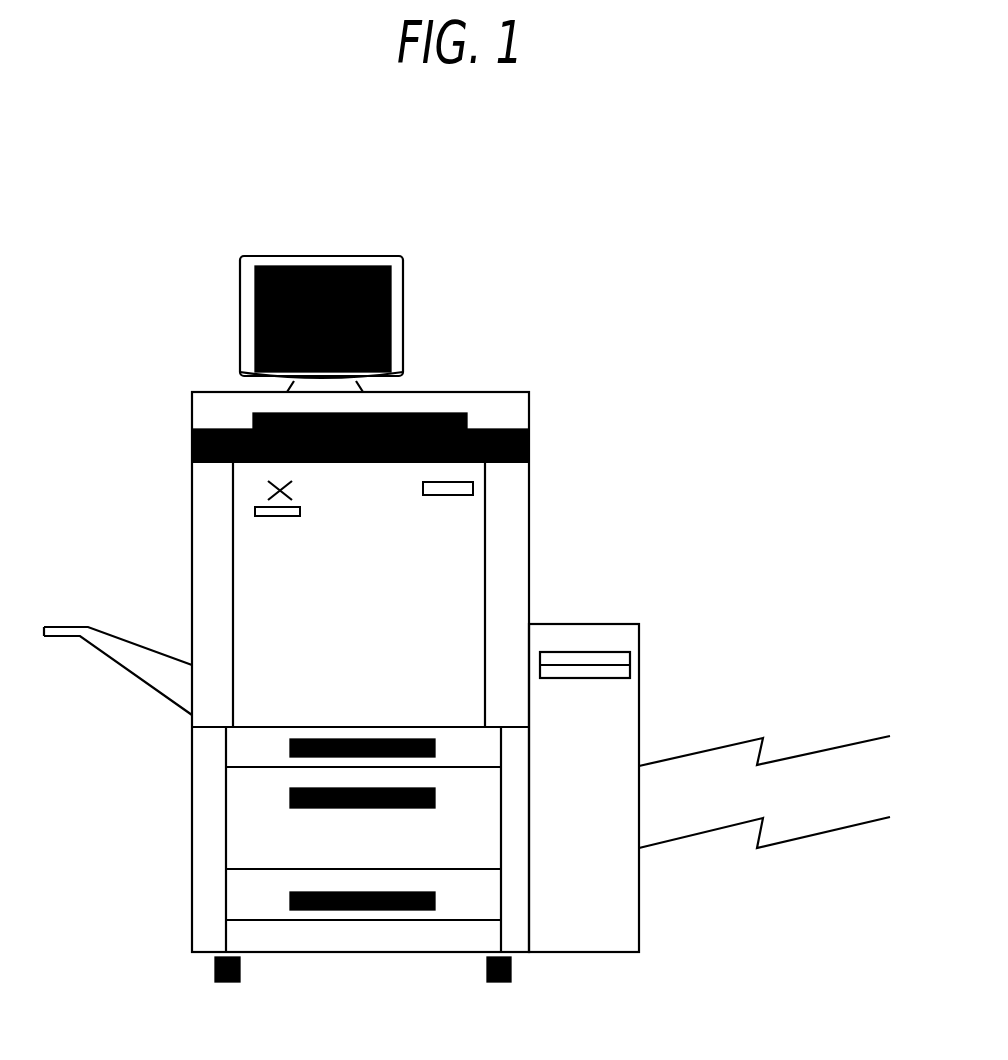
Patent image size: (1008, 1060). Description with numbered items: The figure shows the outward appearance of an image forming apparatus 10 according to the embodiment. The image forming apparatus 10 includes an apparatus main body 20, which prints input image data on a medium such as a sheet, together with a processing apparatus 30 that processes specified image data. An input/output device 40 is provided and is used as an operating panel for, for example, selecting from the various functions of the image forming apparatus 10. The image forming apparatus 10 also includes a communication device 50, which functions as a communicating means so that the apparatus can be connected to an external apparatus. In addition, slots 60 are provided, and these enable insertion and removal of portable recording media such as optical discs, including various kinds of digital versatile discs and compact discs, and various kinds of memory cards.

The image forming apparatus 10 is at (600, 250).
The apparatus main body 20 is at (527, 457).
The processing apparatus 30 is at (573, 623).
The input/output device 40 is at (240, 272).
The communication device 50 is at (807, 835).
The slots 60 is at (630, 657).